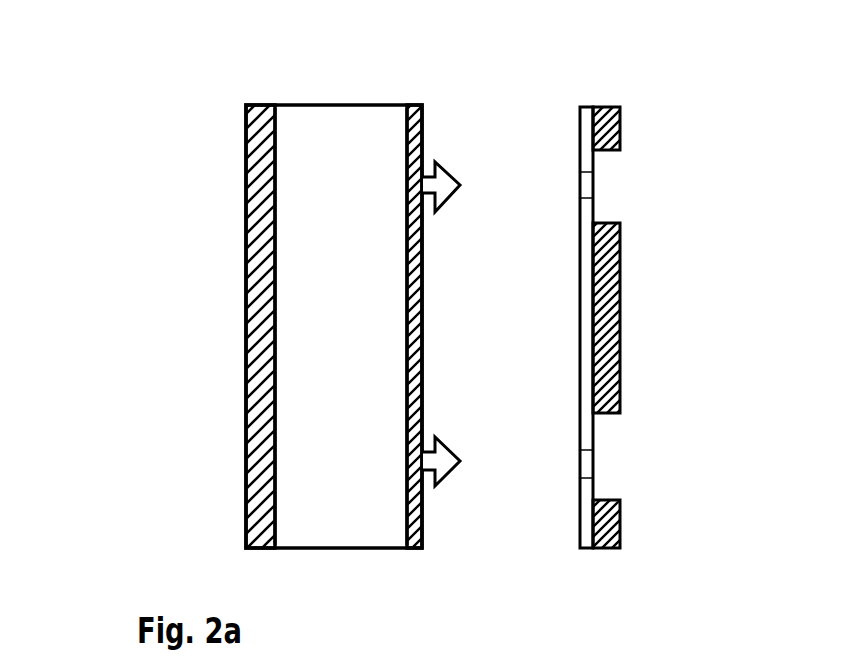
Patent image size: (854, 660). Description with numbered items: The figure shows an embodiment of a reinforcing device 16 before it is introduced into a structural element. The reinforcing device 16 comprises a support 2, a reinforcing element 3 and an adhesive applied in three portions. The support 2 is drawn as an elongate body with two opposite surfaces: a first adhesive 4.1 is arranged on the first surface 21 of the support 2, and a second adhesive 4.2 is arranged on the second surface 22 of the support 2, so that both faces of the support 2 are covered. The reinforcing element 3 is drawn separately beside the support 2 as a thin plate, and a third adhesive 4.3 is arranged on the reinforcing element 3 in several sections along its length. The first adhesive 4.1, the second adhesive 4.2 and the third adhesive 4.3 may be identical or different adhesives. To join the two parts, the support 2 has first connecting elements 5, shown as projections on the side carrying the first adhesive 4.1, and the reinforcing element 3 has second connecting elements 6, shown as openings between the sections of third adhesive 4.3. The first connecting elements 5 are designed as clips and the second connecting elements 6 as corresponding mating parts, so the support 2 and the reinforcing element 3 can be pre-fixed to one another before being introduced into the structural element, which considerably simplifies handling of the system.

The reinforcing device 16 is at (122, 76).
The support 2 is at (370, 130).
The reinforcing element 3 is at (585, 120).
The first adhesive 4.1 is at (420, 283).
The second adhesive 4.2 is at (258, 243).
The third adhesive 4.3 is at (618, 266).
The first connecting elements 5 is at (440, 183).
The second connecting elements 6 is at (590, 185).
The first surface 21 is at (407, 245).
The second surface 22 is at (276, 367).